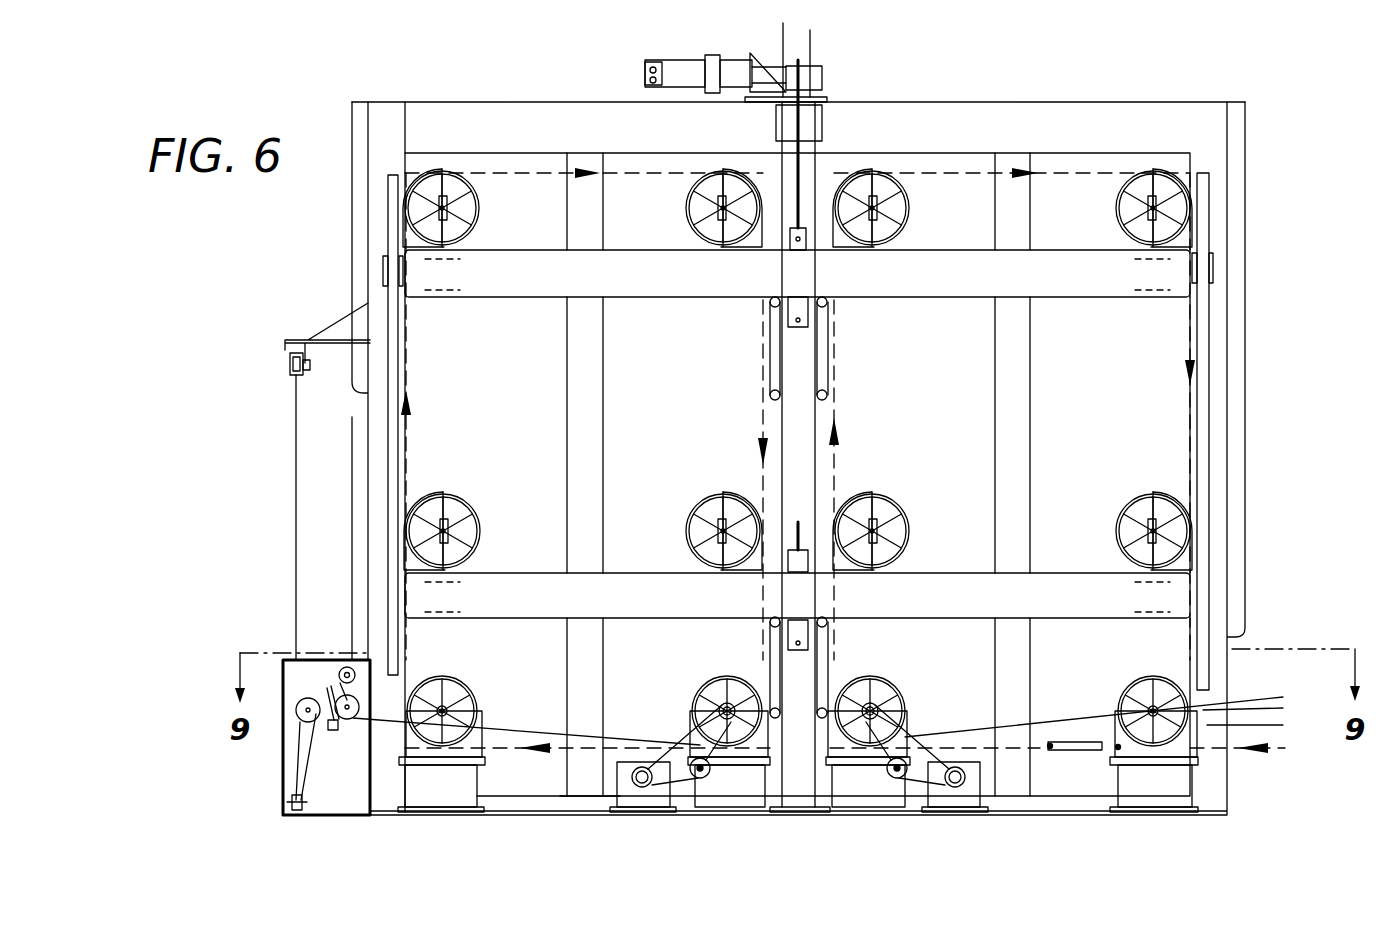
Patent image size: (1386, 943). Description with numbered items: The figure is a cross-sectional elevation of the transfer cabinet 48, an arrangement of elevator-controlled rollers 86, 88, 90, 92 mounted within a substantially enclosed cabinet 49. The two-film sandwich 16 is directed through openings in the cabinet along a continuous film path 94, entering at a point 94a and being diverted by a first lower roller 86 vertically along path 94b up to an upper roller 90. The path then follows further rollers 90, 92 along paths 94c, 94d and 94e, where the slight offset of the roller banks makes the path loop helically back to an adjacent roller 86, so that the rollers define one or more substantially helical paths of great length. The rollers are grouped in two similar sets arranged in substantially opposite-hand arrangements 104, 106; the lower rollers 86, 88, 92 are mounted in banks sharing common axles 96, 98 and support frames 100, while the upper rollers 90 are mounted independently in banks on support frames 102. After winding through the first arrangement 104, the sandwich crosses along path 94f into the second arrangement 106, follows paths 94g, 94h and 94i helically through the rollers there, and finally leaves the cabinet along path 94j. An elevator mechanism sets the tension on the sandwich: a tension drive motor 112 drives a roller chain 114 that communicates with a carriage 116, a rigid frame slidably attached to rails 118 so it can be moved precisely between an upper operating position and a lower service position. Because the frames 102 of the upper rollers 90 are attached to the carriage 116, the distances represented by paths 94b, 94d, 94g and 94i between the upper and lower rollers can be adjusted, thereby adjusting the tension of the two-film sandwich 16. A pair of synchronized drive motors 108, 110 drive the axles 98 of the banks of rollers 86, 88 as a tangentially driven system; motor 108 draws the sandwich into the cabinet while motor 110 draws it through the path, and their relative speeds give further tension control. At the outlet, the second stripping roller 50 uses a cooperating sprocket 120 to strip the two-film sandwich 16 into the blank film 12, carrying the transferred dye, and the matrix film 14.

The blank film 12 is at (292, 782).
The matrix film 14 is at (340, 668).
The two-film sandwich 16 is at (505, 760).
The transfer cabinet 48 is at (512, 94).
The cabinet 49 is at (915, 100).
The second stripping roller 50 is at (272, 756).
The roller 86 is at (870, 690).
The roller 88 is at (725, 690).
The roller 90 is at (478, 210).
The roller 92 is at (457, 680).
The film path 94 is at (1062, 158).
The path point 94a is at (1213, 700).
The path 94b is at (836, 480).
The path 94c is at (935, 175).
The path 94d is at (1192, 400).
The path 94e is at (1017, 760).
The path 94f is at (592, 796).
The path 94g is at (408, 488).
The path 94h is at (515, 175).
The path 94i is at (763, 372).
The path 94j is at (505, 760).
The common axle 96 is at (430, 702).
The common axle 98 is at (700, 690).
The support frame 100 is at (447, 770).
The support frame 102 is at (455, 248).
The roller arrangement 104 is at (897, 416).
The roller arrangement 106 is at (472, 424).
The drive motor 108 is at (965, 812).
The drive motor 110 is at (655, 812).
The tension drive motor 112 is at (700, 57).
The roller chain 114 is at (805, 150).
The carriage 116 is at (905, 300).
The rail 118 is at (392, 230).
The sprocket 120 is at (673, 735).